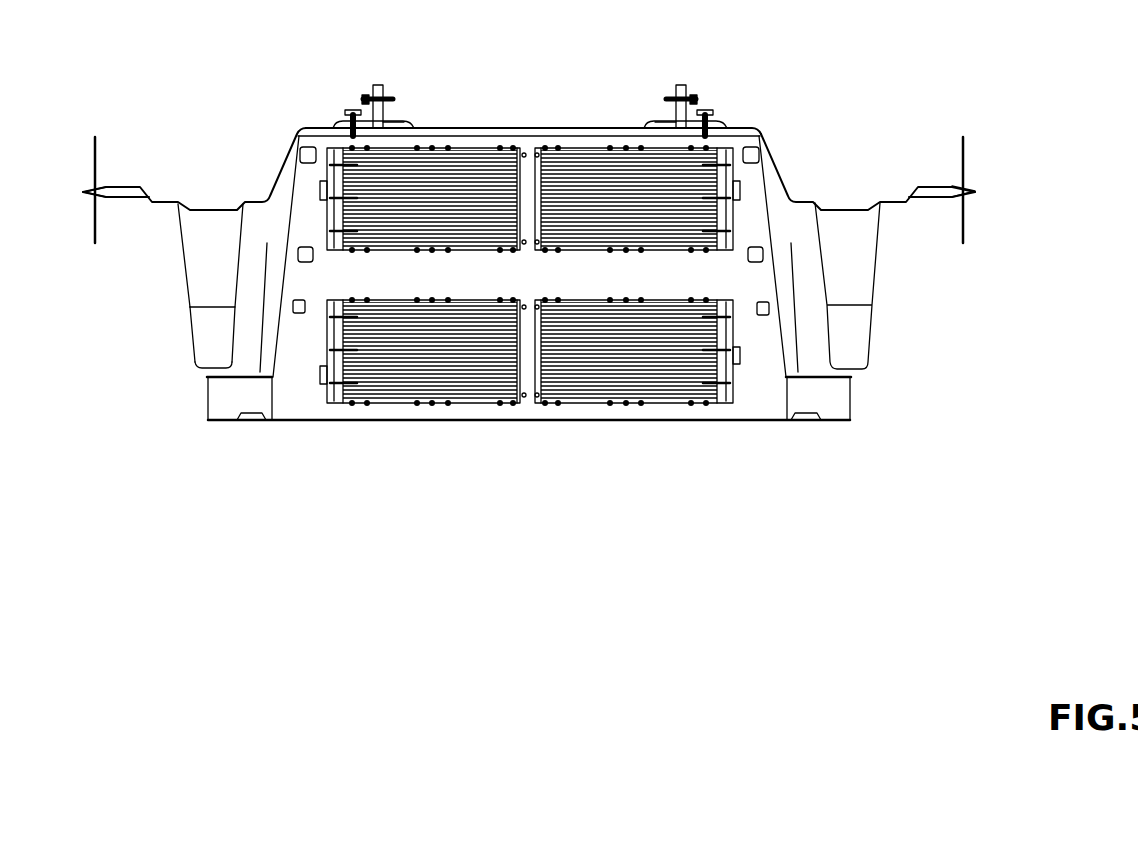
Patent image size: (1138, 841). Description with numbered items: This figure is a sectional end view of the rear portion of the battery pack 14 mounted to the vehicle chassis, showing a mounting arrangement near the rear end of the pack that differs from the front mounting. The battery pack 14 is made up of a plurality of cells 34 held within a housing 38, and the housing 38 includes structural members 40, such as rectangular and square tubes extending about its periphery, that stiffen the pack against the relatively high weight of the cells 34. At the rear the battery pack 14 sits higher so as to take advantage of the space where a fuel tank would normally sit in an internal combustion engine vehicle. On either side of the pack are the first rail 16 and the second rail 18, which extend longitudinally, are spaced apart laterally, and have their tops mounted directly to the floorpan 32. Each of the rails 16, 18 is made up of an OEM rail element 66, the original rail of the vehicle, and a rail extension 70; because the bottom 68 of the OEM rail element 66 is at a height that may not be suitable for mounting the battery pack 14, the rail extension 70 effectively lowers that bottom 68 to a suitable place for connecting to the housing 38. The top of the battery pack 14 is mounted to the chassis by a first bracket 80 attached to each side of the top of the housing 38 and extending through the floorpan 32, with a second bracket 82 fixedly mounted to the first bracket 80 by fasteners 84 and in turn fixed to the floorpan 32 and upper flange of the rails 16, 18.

The battery pack 14 is at (477, 136).
The first rail 16 is at (179, 313).
The second rail 18 is at (871, 348).
The floorpan 32 is at (308, 128).
The cells 34 is at (371, 383).
The housing 38 is at (773, 421).
The structural members 40 is at (207, 409).
The OEM rail element 66 is at (180, 243).
The bottom of the OEM rail element 68 is at (203, 309).
The rail extension 70 is at (191, 362).
The first bracket 80 is at (664, 129).
The second bracket 82 is at (716, 121).
The fasteners 84 is at (673, 95).